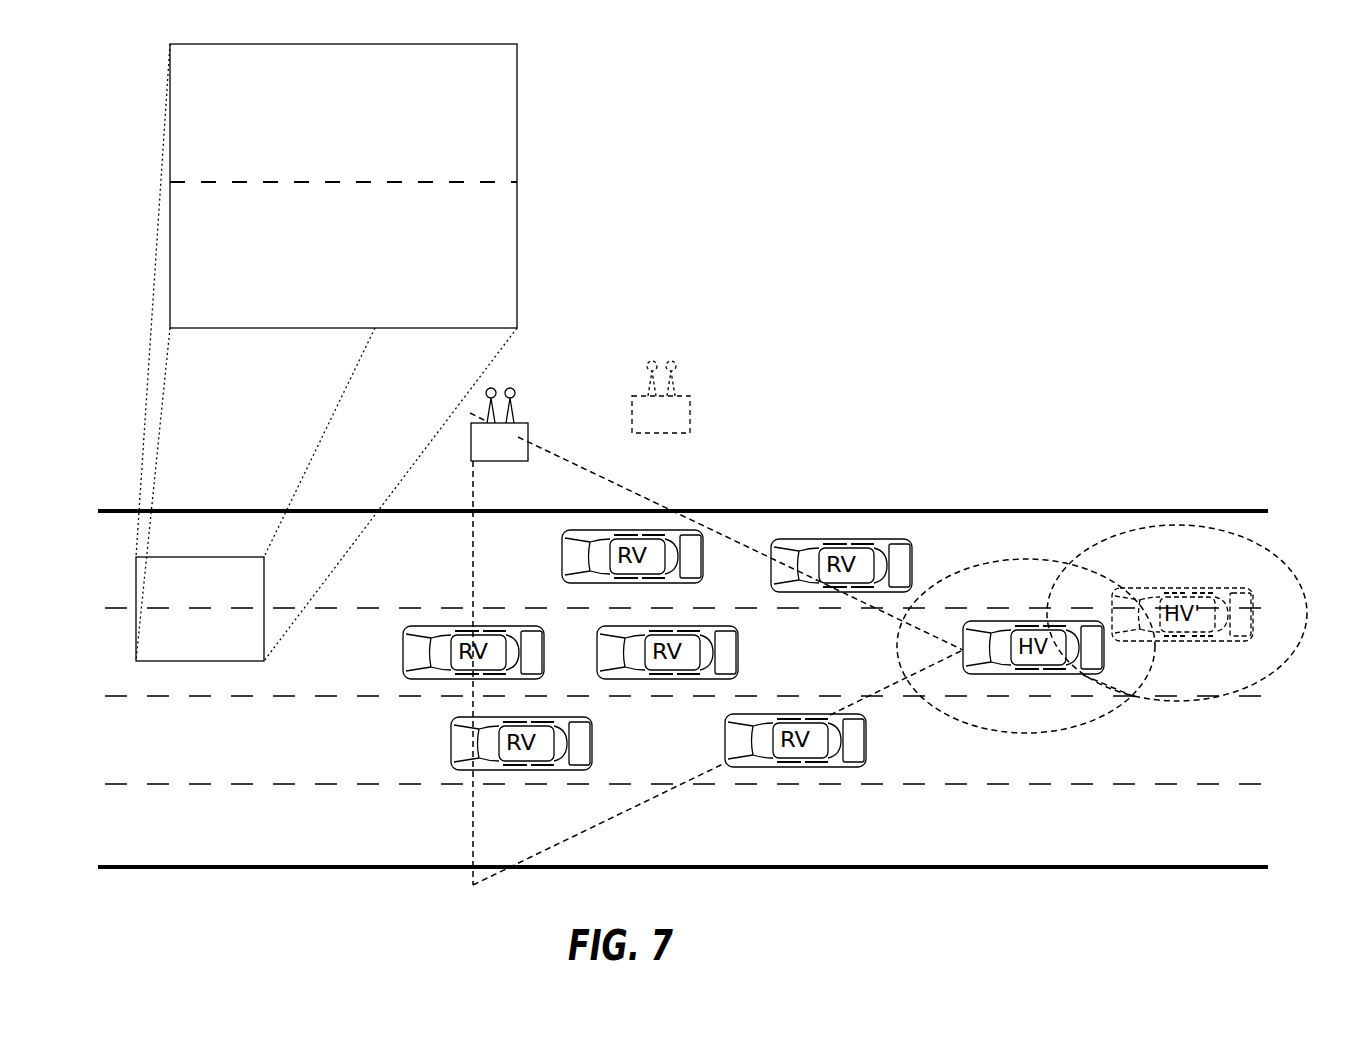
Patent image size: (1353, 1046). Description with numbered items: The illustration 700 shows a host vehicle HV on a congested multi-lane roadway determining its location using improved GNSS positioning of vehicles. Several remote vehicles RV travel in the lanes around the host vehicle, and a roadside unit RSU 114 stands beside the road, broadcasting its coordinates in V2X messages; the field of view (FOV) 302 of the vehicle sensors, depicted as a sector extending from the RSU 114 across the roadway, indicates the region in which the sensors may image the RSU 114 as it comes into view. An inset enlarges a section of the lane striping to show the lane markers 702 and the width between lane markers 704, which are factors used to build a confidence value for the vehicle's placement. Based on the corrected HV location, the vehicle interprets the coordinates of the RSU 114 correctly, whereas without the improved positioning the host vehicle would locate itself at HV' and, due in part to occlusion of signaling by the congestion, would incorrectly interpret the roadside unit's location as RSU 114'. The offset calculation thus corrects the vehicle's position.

The illustration 700 is at (984, 110).
The lane markers 702 is at (282, 187).
The width between lane markers 704 is at (300, 174).
The RSU 114 is at (499, 424).
The RSU (incorrectly interpreted location) 114' is at (661, 397).
The field of view (FOV) 302 is at (805, 660).